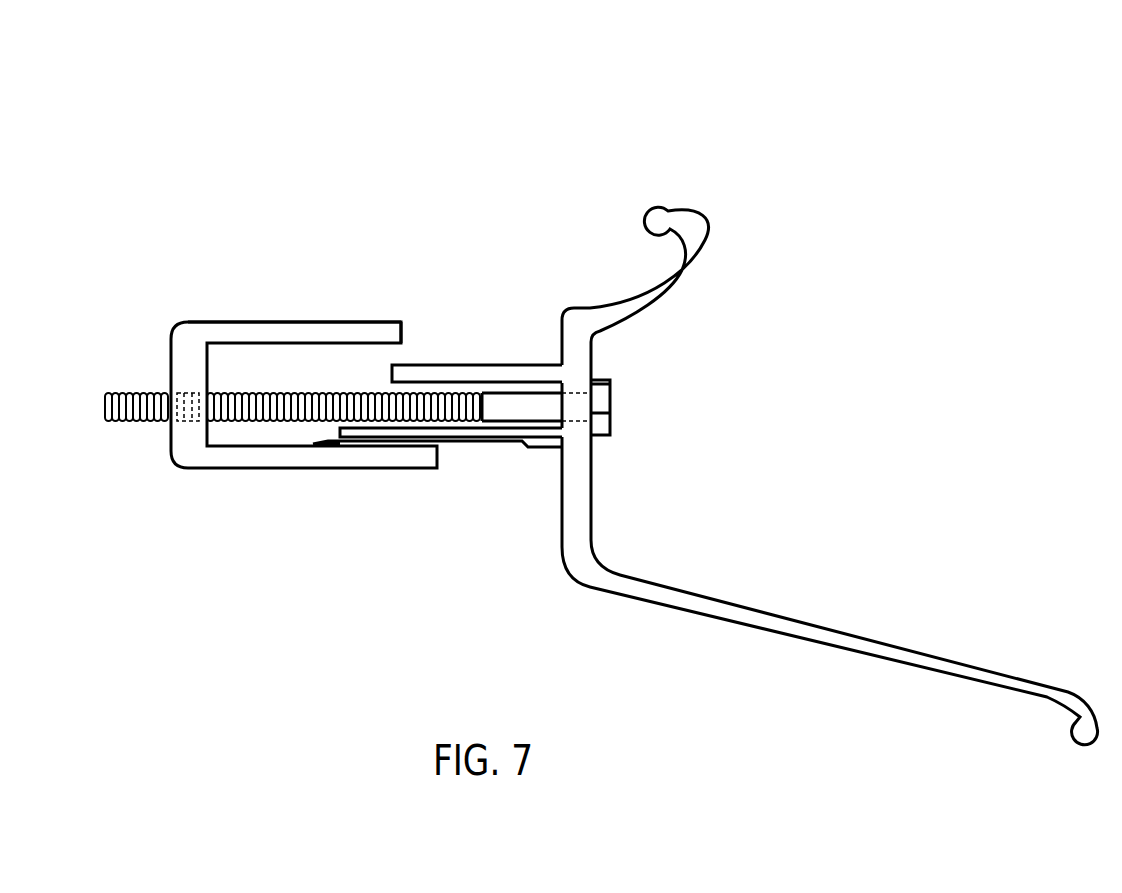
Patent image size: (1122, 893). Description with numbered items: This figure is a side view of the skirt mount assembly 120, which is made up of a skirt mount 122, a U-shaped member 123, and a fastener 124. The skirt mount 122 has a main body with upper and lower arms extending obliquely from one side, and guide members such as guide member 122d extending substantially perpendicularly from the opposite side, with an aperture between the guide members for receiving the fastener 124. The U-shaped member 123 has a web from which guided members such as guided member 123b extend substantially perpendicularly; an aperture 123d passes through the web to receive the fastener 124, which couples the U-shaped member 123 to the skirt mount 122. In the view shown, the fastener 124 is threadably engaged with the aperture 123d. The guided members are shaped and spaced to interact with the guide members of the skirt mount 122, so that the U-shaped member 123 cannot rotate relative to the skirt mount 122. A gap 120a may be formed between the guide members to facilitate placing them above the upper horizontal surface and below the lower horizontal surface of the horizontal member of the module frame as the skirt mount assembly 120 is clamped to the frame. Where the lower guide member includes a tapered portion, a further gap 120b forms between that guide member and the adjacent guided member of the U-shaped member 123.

The skirt mount assembly 120 is at (736, 64).
The gap 120a is at (398, 355).
The gap 120b is at (323, 445).
The skirt mount 122 is at (576, 620).
The guide member 122d is at (515, 365).
The U-shaped member 123 is at (178, 307).
The guided member 123b is at (263, 320).
The aperture 123d is at (190, 422).
The fastener 124 is at (658, 419).